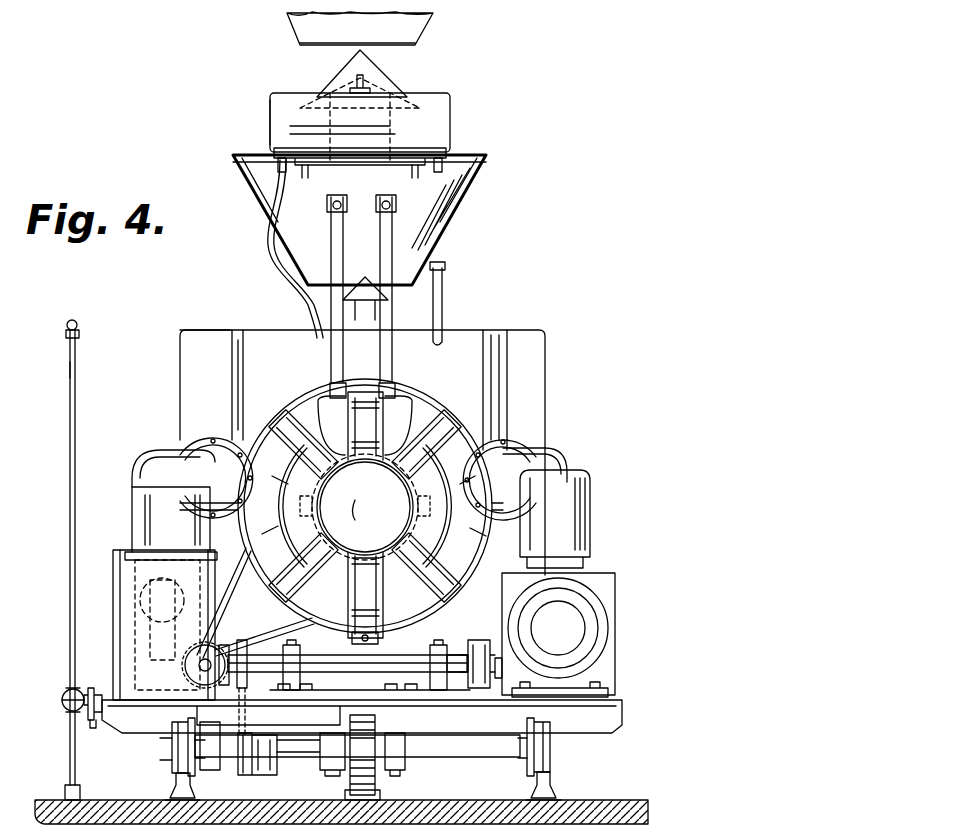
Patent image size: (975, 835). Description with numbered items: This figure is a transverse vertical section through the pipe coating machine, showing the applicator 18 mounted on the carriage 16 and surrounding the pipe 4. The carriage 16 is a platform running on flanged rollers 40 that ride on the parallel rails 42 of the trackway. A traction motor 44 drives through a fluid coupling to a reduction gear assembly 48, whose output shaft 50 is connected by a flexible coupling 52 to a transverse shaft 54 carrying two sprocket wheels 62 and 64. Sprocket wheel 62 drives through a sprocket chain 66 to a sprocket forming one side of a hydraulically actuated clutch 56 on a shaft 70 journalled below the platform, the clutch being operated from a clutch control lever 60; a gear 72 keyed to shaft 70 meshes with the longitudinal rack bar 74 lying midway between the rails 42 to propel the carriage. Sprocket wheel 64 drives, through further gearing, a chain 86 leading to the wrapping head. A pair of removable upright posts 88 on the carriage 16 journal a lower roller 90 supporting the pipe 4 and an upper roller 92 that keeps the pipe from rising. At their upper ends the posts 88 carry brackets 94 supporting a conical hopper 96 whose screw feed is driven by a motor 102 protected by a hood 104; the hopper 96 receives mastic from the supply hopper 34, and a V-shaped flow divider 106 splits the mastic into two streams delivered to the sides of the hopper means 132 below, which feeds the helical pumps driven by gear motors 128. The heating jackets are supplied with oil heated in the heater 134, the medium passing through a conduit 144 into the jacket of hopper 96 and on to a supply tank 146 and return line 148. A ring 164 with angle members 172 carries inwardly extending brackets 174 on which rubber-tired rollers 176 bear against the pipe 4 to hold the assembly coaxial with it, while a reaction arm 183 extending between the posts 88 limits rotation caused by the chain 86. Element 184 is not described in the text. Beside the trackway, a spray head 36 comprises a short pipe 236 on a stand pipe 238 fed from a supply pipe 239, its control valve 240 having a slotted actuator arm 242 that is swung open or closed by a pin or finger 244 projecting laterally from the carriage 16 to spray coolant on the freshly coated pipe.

The pipe 4 is at (394, 510).
The carriage 16 is at (133, 728).
The applicator 18 is at (193, 320).
The supply hopper 34 is at (428, 26).
The spray heads 36 is at (70, 370).
The flanged rollers 40 is at (172, 752).
The rails 42 is at (170, 792).
The traction motor 44 is at (585, 625).
The reduction gear assembly 48 is at (598, 583).
The output shaft 50 is at (497, 658).
The flexible coupling 52 is at (474, 640).
The shaft 54 is at (445, 660).
The clutch 56 is at (262, 775).
The clutch control lever 60 is at (205, 669).
The sprocket wheel 62 is at (243, 640).
The sprocket wheel 64 is at (226, 645).
The sprocket chain 66 is at (250, 678).
The shaft 70 is at (305, 748).
The gear 72 is at (375, 772).
The rack bar 74 is at (348, 795).
The chain 86 is at (235, 574).
The upright posts 88 is at (325, 392).
The roller 90 is at (372, 538).
The roller 92 is at (365, 392).
The brackets 94 is at (378, 238).
The hopper 96 is at (475, 185).
The motor 102 is at (395, 132).
The protective hood 104 is at (388, 72).
The flow divider 106 is at (375, 305).
The gear motor 128 is at (160, 452).
The hopper means 132 is at (272, 330).
The heater 134 is at (113, 620).
The conduit 144 is at (441, 300).
The supply tank 146 is at (270, 125).
The return line 148 is at (268, 256).
The ring 164 is at (336, 392).
The angle members 172 is at (278, 480).
The brackets 174 is at (300, 410).
The rubber-tired rollers 176 is at (290, 420).
The reaction arm 183 is at (380, 639).
The arc guide 184 is at (285, 508).
The pipe 236 is at (76, 323).
The stand pipe 238 is at (70, 556).
The supply pipe 239 is at (65, 795).
The control valve 240 is at (62, 698).
The slotted actuator arm 242 is at (91, 688).
The pin or finger 244 is at (94, 728).